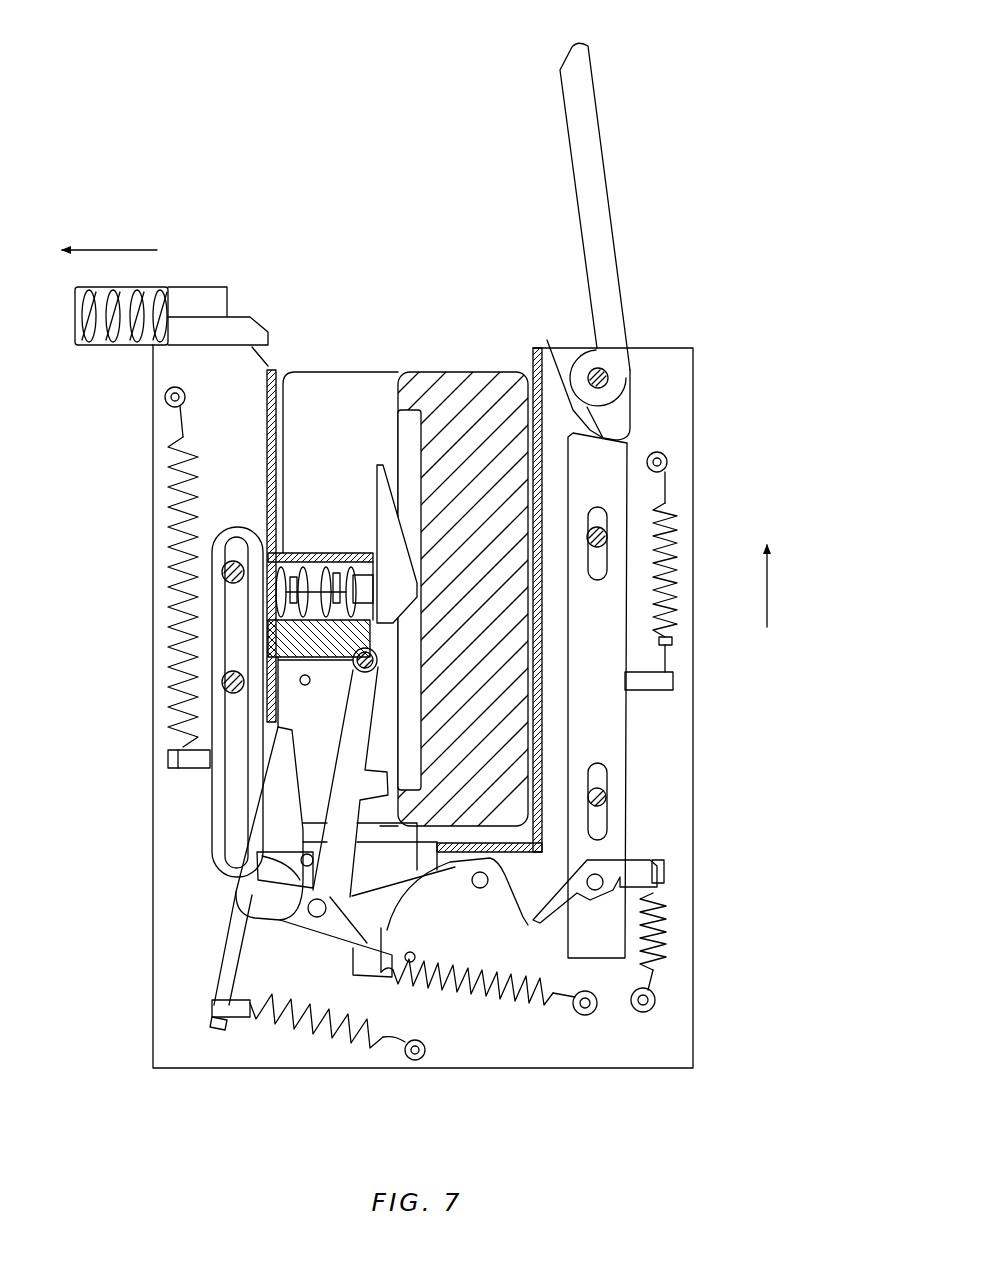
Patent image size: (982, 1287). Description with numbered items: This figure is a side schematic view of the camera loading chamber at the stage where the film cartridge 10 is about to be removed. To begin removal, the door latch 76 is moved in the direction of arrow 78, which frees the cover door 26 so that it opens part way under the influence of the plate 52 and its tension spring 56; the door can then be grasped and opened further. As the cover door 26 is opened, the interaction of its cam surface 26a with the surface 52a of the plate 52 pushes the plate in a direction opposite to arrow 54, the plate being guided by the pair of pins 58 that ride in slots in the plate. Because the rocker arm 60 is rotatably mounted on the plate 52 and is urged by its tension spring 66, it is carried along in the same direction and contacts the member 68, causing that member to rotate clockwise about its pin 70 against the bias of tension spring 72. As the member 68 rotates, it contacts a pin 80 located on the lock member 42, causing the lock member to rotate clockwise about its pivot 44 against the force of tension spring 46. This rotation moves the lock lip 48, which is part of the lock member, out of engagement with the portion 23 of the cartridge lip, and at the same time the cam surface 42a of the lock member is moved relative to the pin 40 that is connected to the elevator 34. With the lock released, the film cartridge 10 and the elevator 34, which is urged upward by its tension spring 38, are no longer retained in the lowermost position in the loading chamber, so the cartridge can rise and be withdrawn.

The film cartridge 10 is at (361, 243).
The portion of lip 23 is at (420, 803).
The cover door 26 is at (600, 193).
The cam surface 26a is at (633, 430).
The elevator 34 is at (237, 533).
The tension spring 38 is at (178, 548).
The pin 40 is at (300, 867).
The lock member 42 is at (262, 905).
The cam surface 42a is at (300, 817).
The pivot 44 is at (352, 675).
The tension spring 46 is at (325, 1040).
The lock lip 48 is at (372, 788).
The plate 52 is at (613, 742).
The surface 52a is at (555, 356).
The arrow 54 is at (768, 585).
The tension spring 56 is at (680, 567).
The pins 58 is at (587, 555).
The rocker arm 60 is at (637, 862).
The tension spring 66 is at (667, 958).
The member 68 is at (457, 893).
The pin 70 is at (482, 892).
The tension spring 72 is at (486, 1000).
The door latch 76 is at (193, 296).
The arrow 78 is at (113, 250).
The pin 80 is at (303, 920).